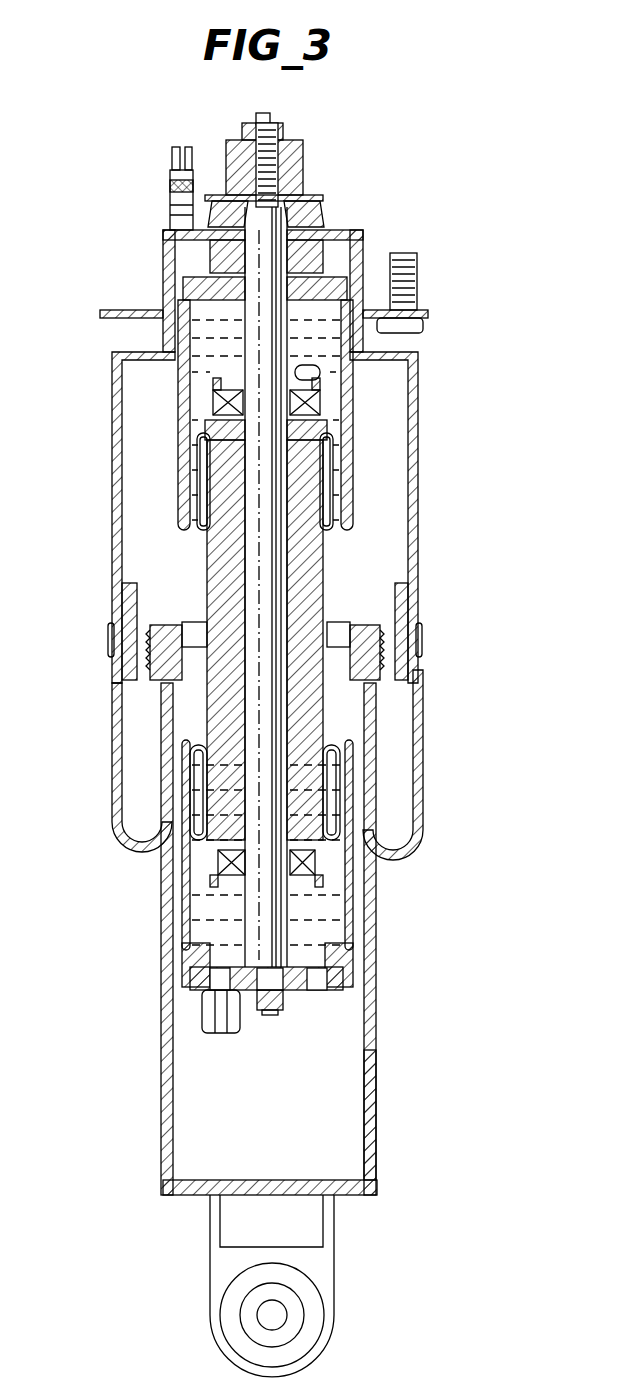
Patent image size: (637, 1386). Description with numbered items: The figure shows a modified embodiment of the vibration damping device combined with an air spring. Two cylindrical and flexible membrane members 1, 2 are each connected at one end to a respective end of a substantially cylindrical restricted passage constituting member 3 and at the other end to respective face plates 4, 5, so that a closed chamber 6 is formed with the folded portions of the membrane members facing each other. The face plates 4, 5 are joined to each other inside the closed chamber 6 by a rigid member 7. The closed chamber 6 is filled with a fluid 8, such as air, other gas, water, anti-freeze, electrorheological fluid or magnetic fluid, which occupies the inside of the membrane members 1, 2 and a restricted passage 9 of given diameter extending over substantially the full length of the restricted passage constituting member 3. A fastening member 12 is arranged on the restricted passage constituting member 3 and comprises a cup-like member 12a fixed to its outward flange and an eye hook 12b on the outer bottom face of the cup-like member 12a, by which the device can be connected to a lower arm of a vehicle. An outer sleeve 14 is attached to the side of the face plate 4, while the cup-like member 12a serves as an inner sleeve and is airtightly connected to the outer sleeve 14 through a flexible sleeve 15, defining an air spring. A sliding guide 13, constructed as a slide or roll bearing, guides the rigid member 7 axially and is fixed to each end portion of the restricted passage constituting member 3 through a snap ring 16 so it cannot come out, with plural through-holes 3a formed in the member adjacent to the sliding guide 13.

The cylindrical and flexible membrane member 1 is at (357, 473).
The cylindrical and flexible membrane member 2 is at (355, 893).
The restricted passage constituting member 3 is at (330, 577).
The through-holes 3a is at (330, 432).
The face plate 4 is at (333, 277).
The face plate 5 is at (290, 992).
The closed chamber 6 is at (223, 361).
The rigid member 7 is at (250, 548).
The fluid 8 is at (195, 388).
The restricted passage 9 is at (285, 556).
The fastening member 12 is at (378, 948).
The cup-like member 12a is at (376, 1118).
The eye hook 12b is at (333, 1312).
The sliding guide 13 is at (322, 408).
The outer sleeve 14 is at (420, 507).
The flexible sleeve 15 is at (425, 735).
The snap ring 16 is at (302, 372).